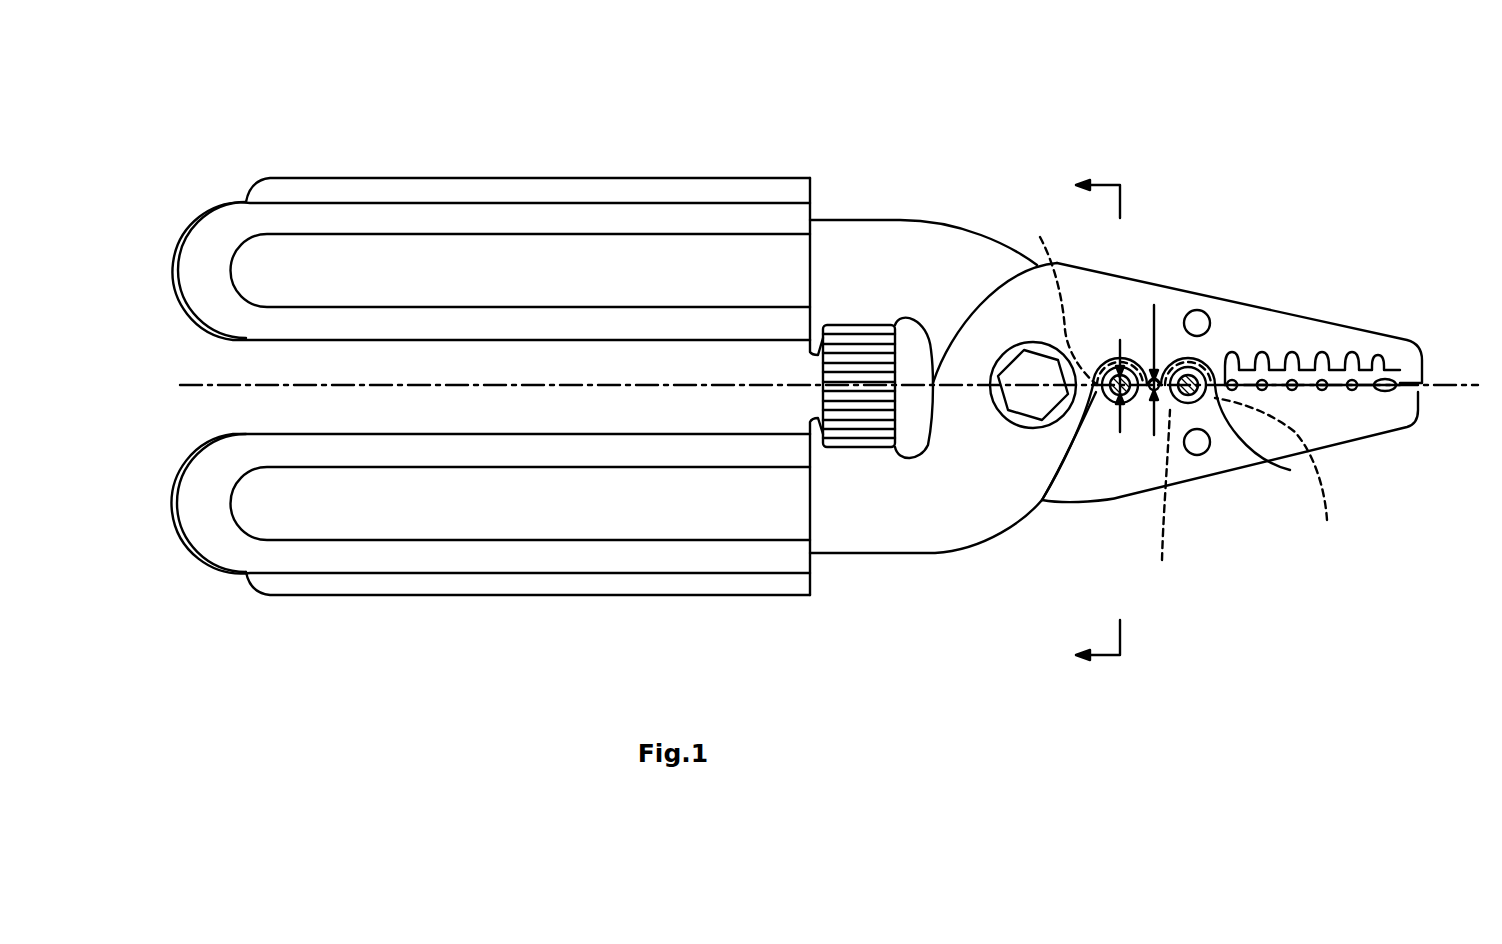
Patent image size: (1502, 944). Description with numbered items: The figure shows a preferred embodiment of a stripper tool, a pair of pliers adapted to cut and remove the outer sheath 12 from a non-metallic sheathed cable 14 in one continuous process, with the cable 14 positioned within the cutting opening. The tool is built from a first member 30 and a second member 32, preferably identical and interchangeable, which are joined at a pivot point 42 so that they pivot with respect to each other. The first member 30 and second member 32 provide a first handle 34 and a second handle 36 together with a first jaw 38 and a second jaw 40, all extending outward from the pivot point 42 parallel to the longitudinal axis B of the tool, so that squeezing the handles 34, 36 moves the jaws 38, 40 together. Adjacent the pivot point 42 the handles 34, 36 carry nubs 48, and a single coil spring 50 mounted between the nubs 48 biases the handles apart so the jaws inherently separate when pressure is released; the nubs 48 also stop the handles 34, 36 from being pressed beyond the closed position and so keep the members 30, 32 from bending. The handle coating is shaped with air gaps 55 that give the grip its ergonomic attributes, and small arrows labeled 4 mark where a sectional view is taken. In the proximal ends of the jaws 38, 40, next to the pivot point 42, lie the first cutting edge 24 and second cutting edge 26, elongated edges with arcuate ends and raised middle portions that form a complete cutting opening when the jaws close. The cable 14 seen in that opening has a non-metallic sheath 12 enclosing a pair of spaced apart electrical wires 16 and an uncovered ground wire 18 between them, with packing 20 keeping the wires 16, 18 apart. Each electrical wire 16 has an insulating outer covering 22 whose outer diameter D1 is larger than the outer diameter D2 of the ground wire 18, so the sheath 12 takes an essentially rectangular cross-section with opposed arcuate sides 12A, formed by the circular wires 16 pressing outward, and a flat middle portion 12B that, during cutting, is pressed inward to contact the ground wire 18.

The section line 4- 4 is at (1088, 422).
The outer sheath 12 is at (1160, 352).
The opposed arcuate side 12A is at (1333, 540).
The flat middle portion 12B is at (1164, 501).
The non-metallic sheathed cable 14 is at (651, 150).
The electrical wires 16 is at (1103, 408).
The uncovered ground wire 18 is at (1124, 432).
The packing 20 is at (1185, 445).
The outer covering 22 is at (1110, 410).
The first cutting edge 24 is at (1258, 430).
The second cutting edge 26 is at (1208, 342).
The first member 30 is at (478, 178).
The second member 32 is at (505, 595).
The first handle 34 is at (608, 190).
The second handle 36 is at (843, 560).
The first jaw 38 is at (1205, 440).
The second jaw 40 is at (1347, 330).
The pivot point 42 is at (1033, 392).
The nubs 48 is at (820, 340).
The coil spring 50 is at (825, 377).
The air gaps 55 is at (327, 257).
The longitudinal axis B— B is at (827, 385).
The outer diameter of outer covering D1 is at (1119, 368).
The outer diameter of ground wire D2 is at (1156, 360).